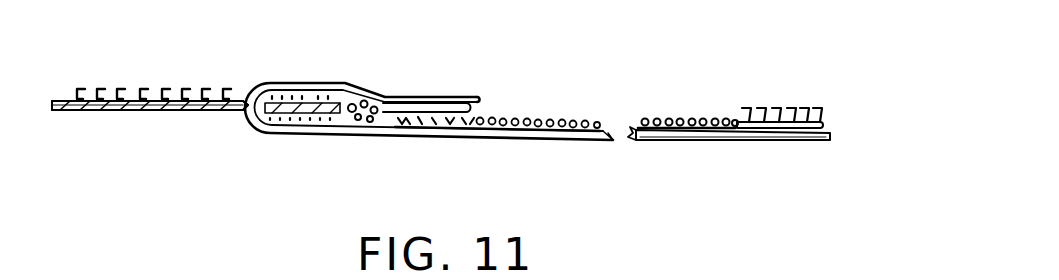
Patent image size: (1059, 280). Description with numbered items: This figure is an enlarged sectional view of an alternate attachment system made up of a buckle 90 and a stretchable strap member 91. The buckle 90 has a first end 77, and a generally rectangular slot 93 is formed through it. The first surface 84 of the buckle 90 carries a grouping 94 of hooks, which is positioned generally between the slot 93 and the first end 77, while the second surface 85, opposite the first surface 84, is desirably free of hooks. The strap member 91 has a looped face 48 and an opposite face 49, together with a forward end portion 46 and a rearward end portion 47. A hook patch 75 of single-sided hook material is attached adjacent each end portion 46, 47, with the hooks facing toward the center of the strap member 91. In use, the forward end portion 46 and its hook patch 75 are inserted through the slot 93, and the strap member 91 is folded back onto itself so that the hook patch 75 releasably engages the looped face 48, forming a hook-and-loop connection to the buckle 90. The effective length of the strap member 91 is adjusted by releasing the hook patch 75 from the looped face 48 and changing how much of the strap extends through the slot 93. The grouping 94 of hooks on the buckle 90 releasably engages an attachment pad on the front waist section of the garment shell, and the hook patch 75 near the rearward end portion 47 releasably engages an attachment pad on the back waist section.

The forward end portion 46 is at (465, 96).
The rearward end portion 47 is at (758, 142).
The looped face 48 is at (688, 118).
The opposite face 49 is at (681, 141).
The hook patch 75 is at (416, 108).
The first end 77 is at (54, 110).
The first surface 84 is at (54, 100).
The second surface 85 is at (110, 111).
The buckle 90 is at (187, 111).
The strap member 91 is at (708, 118).
The slot 93 is at (248, 103).
The grouping of hooks 94 is at (155, 91).